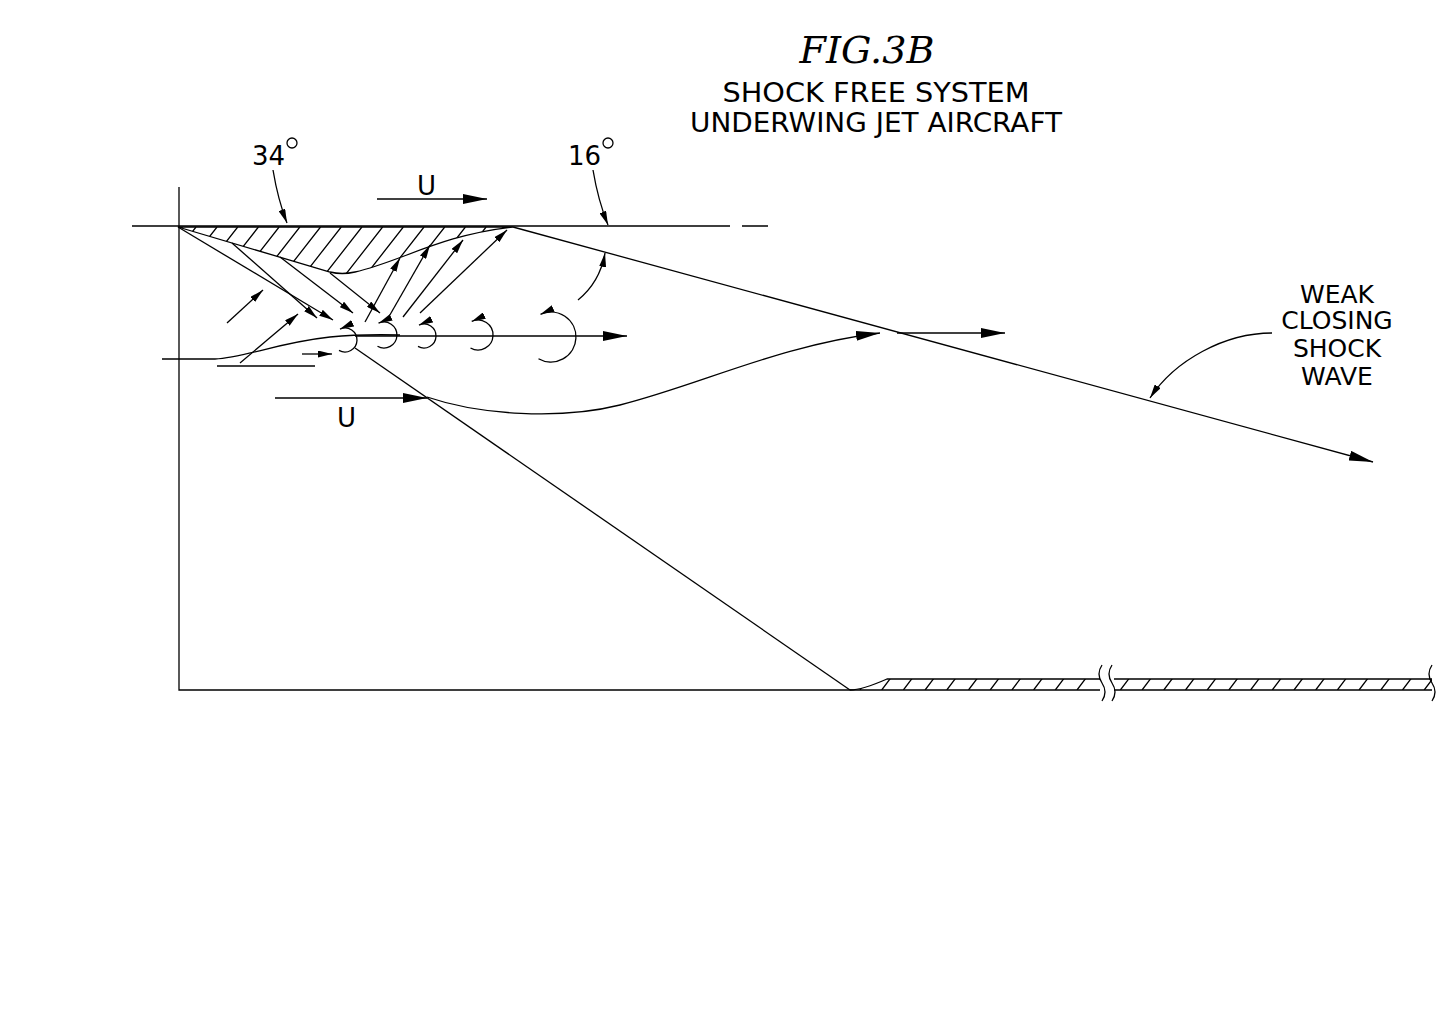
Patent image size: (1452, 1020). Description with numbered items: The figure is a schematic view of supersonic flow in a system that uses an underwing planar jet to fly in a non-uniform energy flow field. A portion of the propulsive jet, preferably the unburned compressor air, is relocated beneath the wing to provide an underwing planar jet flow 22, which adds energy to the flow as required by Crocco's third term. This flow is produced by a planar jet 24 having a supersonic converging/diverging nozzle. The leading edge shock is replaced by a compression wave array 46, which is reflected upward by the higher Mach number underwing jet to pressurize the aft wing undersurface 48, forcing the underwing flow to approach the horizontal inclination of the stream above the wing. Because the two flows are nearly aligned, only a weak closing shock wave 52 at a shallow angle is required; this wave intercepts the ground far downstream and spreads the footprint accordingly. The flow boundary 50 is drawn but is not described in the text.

The underwing planar jet flow 22 is at (513, 337).
The planar jet 24 is at (282, 367).
The compression wave array 46 is at (261, 345).
The aft wing undersurface 48 is at (432, 237).
The exhaust plume boundary 50 is at (637, 402).
The weak closing shock wave 52 is at (780, 300).